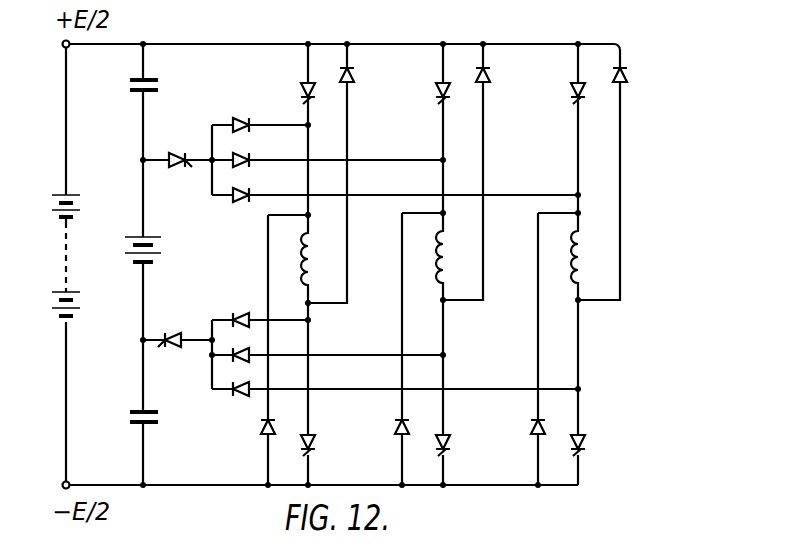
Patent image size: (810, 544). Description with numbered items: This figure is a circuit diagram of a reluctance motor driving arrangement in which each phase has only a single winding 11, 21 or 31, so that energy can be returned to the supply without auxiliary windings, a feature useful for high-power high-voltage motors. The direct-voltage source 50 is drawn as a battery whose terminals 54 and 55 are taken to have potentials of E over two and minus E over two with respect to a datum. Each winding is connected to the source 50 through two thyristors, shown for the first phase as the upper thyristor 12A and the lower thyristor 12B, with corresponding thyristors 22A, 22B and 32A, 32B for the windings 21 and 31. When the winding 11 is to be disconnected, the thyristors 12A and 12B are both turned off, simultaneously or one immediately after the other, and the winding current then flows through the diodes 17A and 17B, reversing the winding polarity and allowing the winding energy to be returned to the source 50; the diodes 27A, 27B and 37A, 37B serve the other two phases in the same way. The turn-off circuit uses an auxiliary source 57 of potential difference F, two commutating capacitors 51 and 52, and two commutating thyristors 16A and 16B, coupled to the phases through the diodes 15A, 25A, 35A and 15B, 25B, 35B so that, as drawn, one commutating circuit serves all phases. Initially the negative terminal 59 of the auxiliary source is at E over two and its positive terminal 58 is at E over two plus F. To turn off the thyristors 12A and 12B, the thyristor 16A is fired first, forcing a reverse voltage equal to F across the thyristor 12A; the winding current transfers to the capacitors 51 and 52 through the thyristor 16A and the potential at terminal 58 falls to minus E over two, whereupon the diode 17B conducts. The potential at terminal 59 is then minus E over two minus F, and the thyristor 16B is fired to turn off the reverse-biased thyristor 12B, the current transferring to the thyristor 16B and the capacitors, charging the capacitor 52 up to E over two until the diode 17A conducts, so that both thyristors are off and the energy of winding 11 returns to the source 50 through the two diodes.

The positive DC terminal 54 is at (66, 47).
The negative DC terminal 55 is at (66, 484).
The commutating capacitor 51 is at (133, 80).
The commutating capacitor 52 is at (130, 416).
The D.V. source 50 is at (84, 302).
The auxiliary source 57 is at (160, 252).
The positive terminal of the auxiliary source 58 is at (143, 160).
The negative terminal of the auxiliary source 59 is at (143, 341).
The commutating thyristor 16A is at (180, 155).
The commutating thyristor 16B is at (181, 338).
The diode 15A is at (240, 120).
The diode 25A is at (212, 167).
The diode 35A is at (236, 205).
The diode 15B is at (244, 312).
The diode 25B is at (228, 358).
The diode 35B is at (240, 396).
The thyristor 12A is at (303, 92).
The main thyristor 22A is at (437, 95).
The main thyristor 32A is at (570, 94).
The thyristor 12B is at (318, 442).
The main thyristor 22B is at (452, 442).
The main thyristor 32B is at (584, 438).
The diode 17A is at (352, 76).
The feedback diode 27A is at (490, 76).
The feedback diode 37A is at (612, 68).
The diode 17B is at (262, 436).
The feedback diode 27B is at (398, 427).
The feedback diode 37B is at (530, 428).
The winding 11 is at (312, 242).
The winding 21 is at (446, 242).
The winding 31 is at (583, 242).